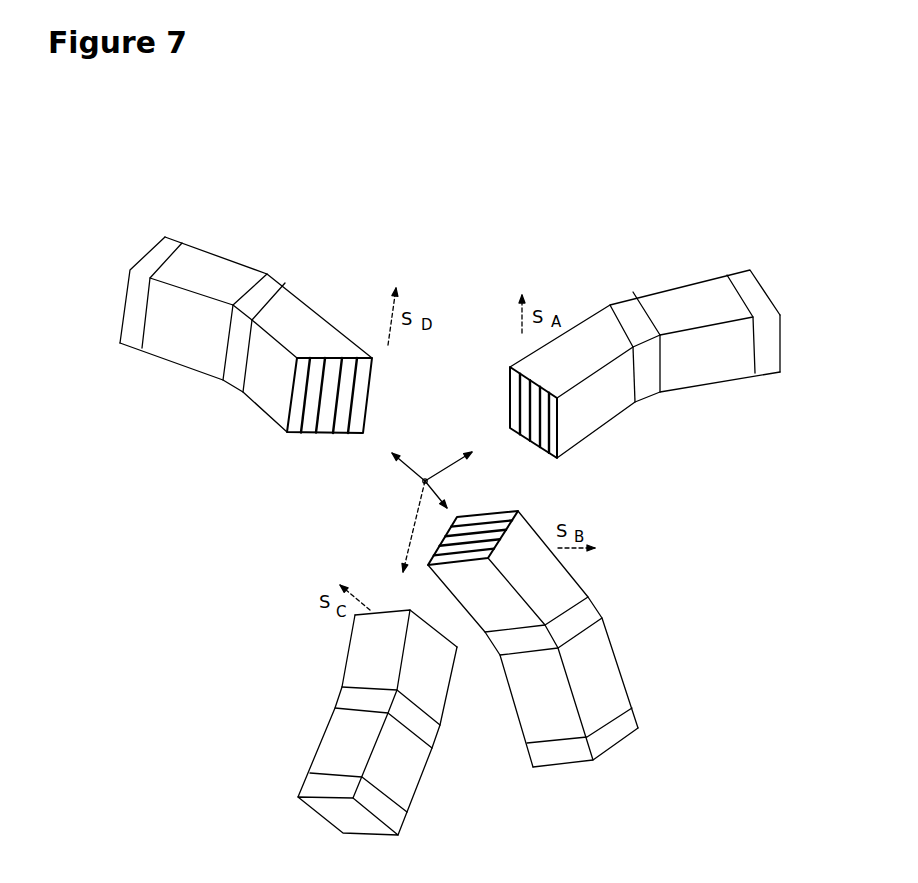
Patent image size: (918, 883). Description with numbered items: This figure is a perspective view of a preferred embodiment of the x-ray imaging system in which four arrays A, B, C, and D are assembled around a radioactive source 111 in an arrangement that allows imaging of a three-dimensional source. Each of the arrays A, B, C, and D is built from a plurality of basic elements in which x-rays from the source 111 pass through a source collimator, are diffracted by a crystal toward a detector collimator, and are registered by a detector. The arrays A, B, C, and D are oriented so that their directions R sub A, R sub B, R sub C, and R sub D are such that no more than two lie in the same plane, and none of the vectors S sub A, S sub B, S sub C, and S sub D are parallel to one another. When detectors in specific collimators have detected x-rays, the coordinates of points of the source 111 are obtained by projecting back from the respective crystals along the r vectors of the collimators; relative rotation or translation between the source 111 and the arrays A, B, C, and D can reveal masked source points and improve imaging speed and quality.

The radioactive source 111 is at (425, 481).
The array A is at (655, 364).
The array B is at (538, 639).
The array C is at (374, 722).
The array D is at (246, 331).